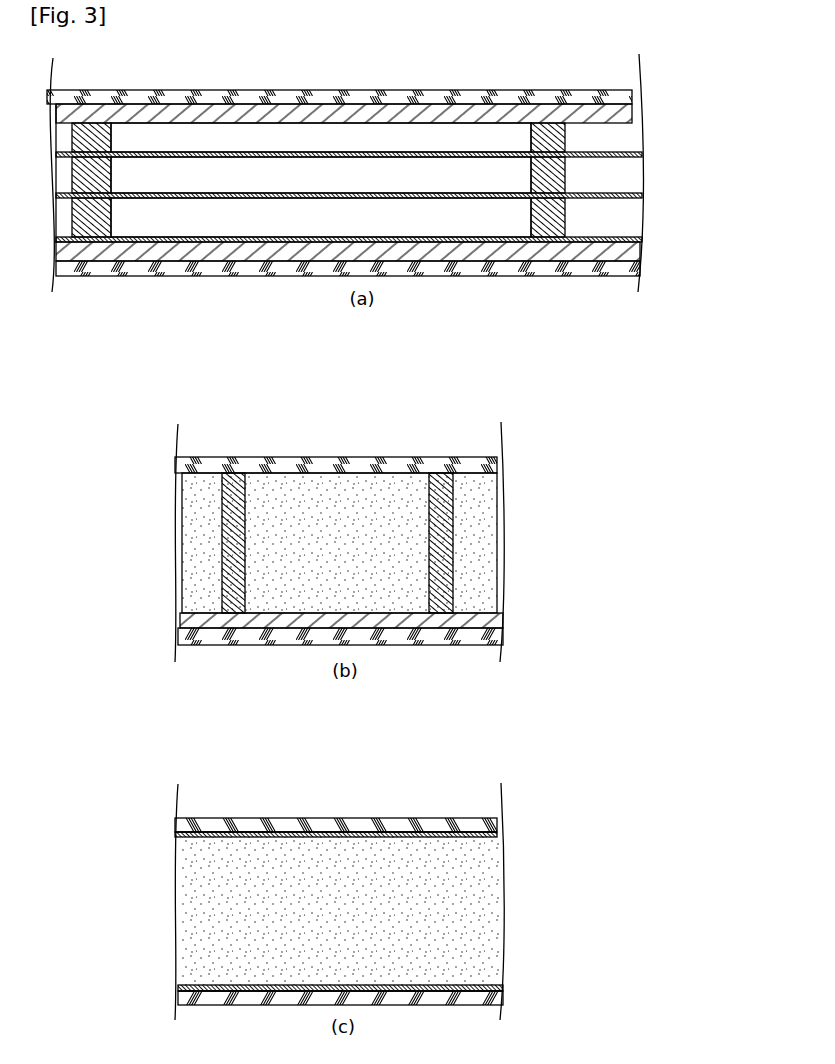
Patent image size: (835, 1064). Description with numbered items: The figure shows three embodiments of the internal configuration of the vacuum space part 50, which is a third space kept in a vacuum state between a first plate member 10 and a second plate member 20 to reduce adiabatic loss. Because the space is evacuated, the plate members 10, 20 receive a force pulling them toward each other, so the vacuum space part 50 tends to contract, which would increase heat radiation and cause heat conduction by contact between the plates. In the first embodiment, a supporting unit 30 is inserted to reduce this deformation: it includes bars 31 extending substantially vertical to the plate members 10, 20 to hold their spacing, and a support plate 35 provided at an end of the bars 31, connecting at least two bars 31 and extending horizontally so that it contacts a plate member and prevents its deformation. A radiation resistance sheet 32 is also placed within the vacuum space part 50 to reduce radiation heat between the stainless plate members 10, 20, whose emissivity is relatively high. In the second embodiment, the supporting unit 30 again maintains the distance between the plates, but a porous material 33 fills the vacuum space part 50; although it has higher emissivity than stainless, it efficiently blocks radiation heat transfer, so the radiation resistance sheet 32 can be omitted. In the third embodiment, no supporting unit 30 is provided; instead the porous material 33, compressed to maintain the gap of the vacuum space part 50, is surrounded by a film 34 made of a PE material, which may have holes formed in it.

The first plate member 10 is at (308, 89).
The second plate member 20 is at (414, 277).
The supporting unit 30 is at (391, 368).
The bar 31 is at (567, 176).
The radiation resistance sheet 32 is at (205, 199).
The porous material 33 is at (492, 573).
The film 34 is at (485, 985).
The support plate 35 is at (497, 108).
The vacuum space part 50 is at (430, 173).